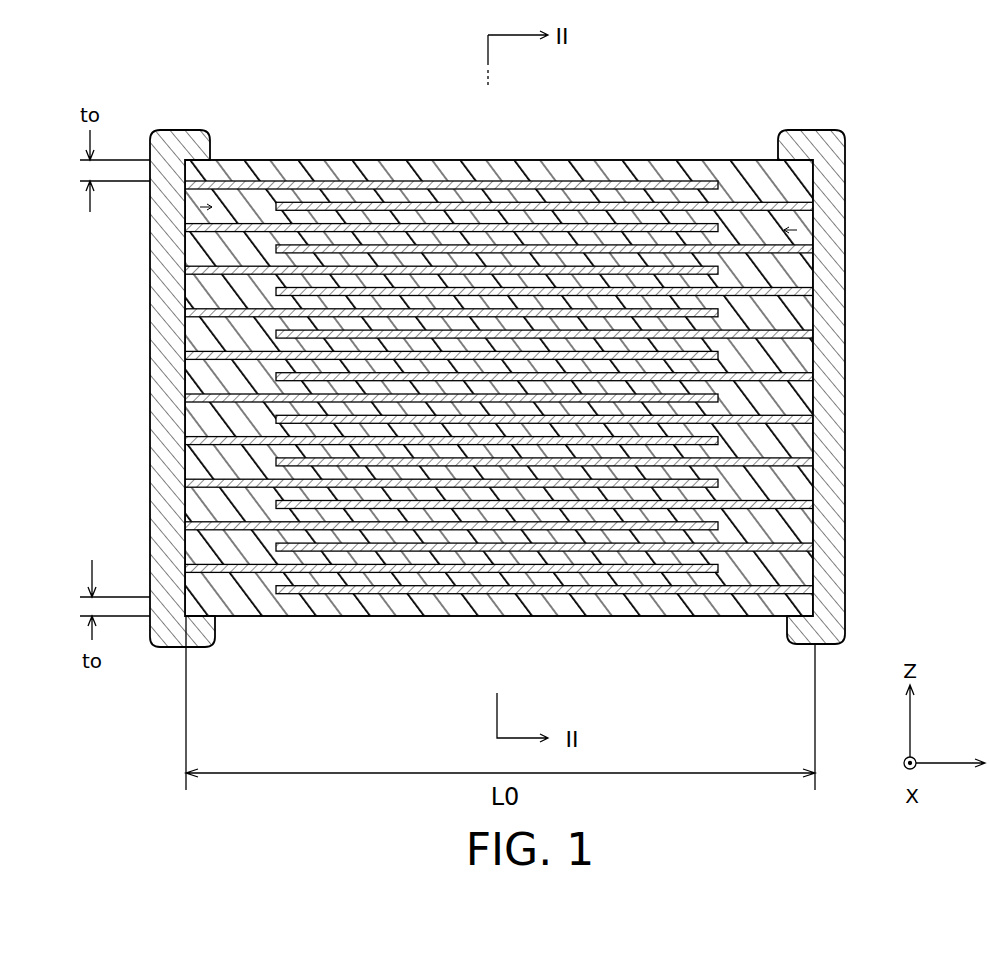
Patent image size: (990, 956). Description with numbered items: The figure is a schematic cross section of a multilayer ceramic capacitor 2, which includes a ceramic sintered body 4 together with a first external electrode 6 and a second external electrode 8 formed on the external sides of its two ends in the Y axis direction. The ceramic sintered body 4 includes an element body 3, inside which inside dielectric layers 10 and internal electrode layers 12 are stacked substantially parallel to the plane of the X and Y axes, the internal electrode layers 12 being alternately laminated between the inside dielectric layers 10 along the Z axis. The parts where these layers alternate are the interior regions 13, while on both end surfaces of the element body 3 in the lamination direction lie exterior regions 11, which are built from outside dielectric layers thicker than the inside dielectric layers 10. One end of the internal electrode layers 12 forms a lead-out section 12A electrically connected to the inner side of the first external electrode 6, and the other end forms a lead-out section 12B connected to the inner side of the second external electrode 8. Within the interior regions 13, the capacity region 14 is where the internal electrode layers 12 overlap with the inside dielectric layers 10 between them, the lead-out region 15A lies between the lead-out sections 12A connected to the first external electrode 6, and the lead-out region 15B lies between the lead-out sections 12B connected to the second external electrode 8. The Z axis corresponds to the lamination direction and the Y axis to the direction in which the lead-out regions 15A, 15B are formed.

The multilayer ceramic capacitor 2 is at (485, 405).
The element body 3 is at (485, 398).
The ceramic sintered body 4 is at (485, 398).
The first external electrode 6 is at (150, 482).
The second external electrode 8 is at (812, 128).
The inside dielectric layers 10 is at (440, 160).
The exterior regions 11 is at (372, 160).
The internal electrode layers 12 is at (449, 384).
The lead-out section 12A is at (243, 160).
The lead-out section 12B is at (762, 198).
The interior regions 13 is at (496, 384).
The capacity region 14 is at (628, 160).
The lead-out region 15A is at (183, 216).
The lead-out region 15B is at (842, 160).